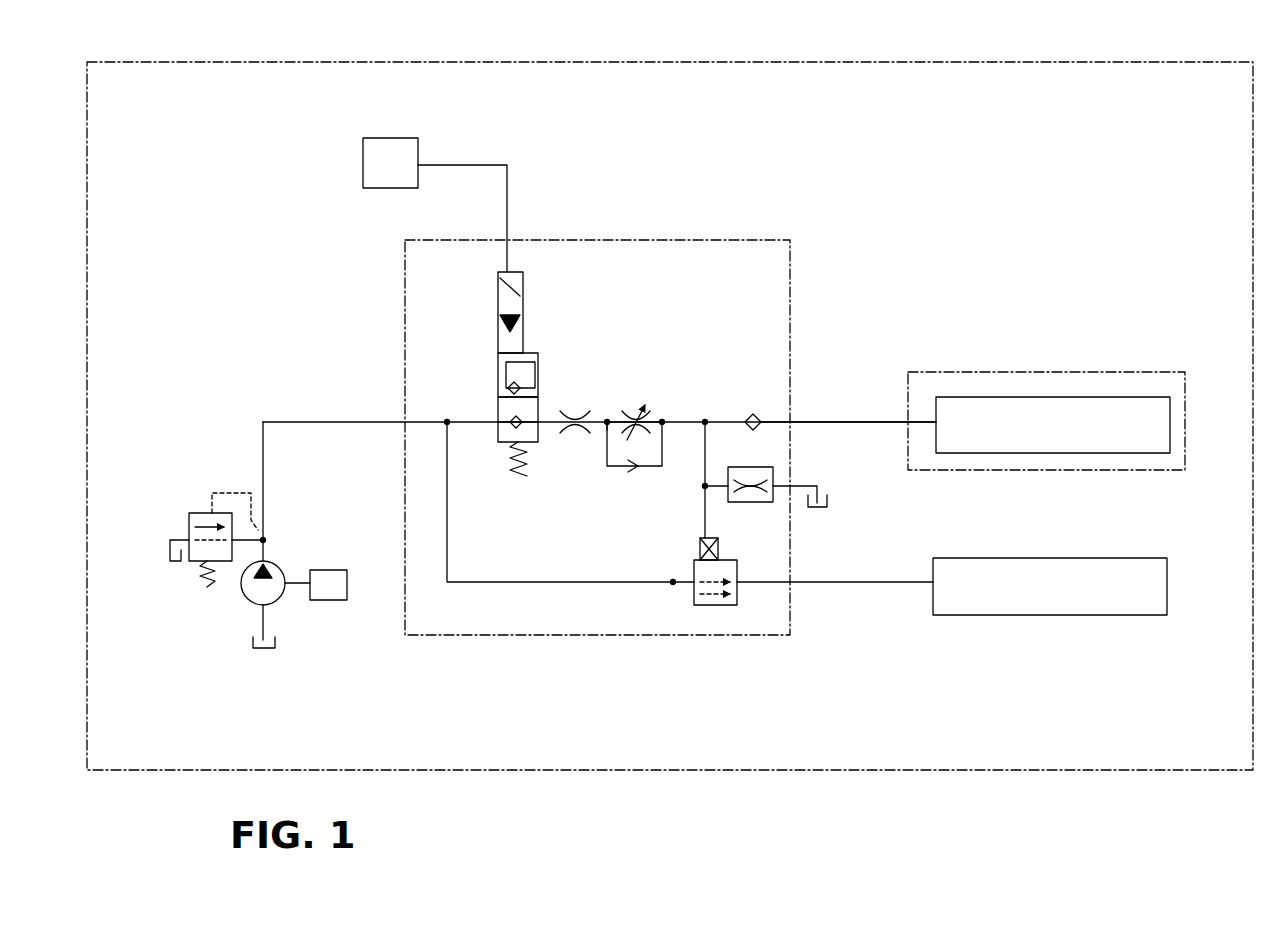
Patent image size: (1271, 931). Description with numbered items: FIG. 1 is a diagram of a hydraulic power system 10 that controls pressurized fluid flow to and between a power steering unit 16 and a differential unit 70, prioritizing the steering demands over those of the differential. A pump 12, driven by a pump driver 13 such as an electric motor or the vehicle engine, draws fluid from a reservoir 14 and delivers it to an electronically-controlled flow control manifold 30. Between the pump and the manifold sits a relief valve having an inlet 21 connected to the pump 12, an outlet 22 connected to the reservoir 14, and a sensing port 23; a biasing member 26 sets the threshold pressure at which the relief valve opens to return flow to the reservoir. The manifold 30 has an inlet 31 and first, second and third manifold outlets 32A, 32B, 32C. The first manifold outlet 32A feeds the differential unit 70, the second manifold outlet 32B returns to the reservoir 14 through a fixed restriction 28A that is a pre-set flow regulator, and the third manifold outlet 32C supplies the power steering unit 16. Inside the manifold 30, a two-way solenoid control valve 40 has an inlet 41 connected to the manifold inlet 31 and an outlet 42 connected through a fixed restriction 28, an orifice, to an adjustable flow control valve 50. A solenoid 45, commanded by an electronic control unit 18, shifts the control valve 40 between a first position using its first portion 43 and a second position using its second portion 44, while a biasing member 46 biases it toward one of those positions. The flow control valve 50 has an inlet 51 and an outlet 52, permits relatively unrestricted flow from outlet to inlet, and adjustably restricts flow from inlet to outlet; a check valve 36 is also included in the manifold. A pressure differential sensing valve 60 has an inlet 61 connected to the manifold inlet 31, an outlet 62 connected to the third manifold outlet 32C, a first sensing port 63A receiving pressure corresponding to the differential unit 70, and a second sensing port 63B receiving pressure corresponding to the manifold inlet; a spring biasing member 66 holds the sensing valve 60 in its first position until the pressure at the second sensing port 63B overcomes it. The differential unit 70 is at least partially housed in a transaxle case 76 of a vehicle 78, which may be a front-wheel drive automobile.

The hydraulic power system 10 is at (265, 275).
The pump 12 is at (276, 562).
The pump driver 13 is at (318, 603).
The reservoir 14 is at (832, 503).
The power steering unit 16 is at (985, 558).
The electronic control unit 18 is at (362, 130).
The relief valve inlet 21 is at (238, 560).
The relief valve outlet 22 is at (187, 514).
The sensing port 23 is at (226, 492).
The biasing member 26 is at (205, 588).
The fixed restriction 28 is at (570, 410).
The fixed restriction 28A is at (741, 467).
The electronically-controlled flow control manifold 30 is at (690, 238).
The manifold inlet 31 is at (388, 415).
The first manifold outlet 32A is at (806, 412).
The second manifold outlet 32B is at (802, 482).
The third manifold outlet 32C is at (808, 582).
The check valve 36 is at (752, 413).
The two-way solenoid control valve 40 is at (510, 391).
The control valve inlet 41 is at (490, 432).
The control valve outlet 42 is at (540, 442).
The first portion 43 is at (494, 410).
The second portion 44 is at (494, 362).
The solenoid 45 is at (498, 300).
The biasing member 46 is at (524, 470).
The adjustable flow control valve 50 is at (653, 402).
The flow control valve inlet 51 is at (606, 414).
The flow control valve outlet 52 is at (666, 415).
The pressure differential sensing valve 60 is at (692, 600).
The sensing valve inlet 61 is at (684, 592).
The sensing valve outlet 62 is at (741, 578).
The first sensing port 63A is at (695, 550).
The second sensing port 63B is at (706, 614).
The biasing member 66 is at (726, 545).
The differential unit 70 is at (1090, 372).
The transaxle case 76 is at (982, 373).
The vehicle 78 is at (1110, 60).